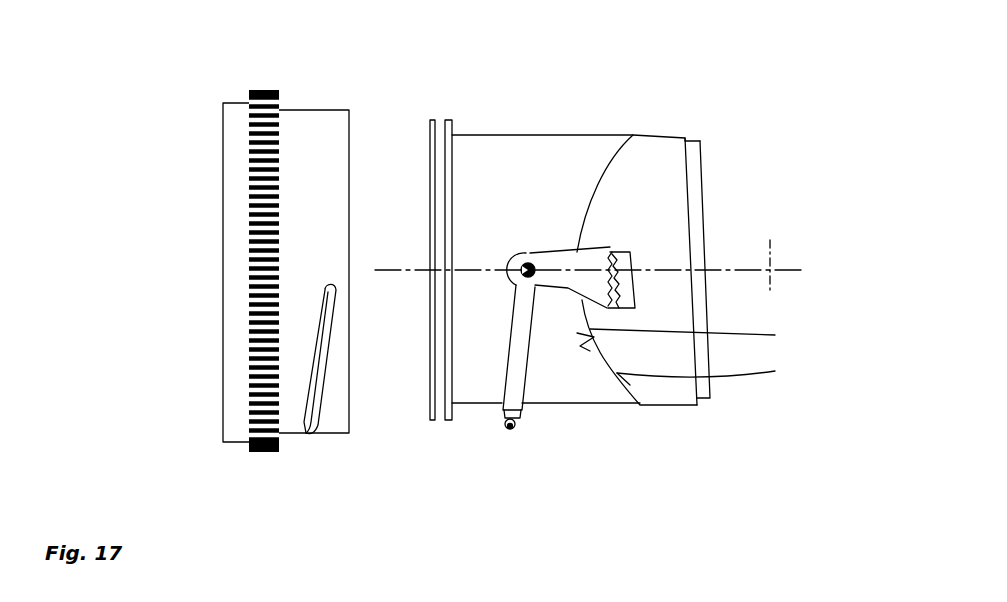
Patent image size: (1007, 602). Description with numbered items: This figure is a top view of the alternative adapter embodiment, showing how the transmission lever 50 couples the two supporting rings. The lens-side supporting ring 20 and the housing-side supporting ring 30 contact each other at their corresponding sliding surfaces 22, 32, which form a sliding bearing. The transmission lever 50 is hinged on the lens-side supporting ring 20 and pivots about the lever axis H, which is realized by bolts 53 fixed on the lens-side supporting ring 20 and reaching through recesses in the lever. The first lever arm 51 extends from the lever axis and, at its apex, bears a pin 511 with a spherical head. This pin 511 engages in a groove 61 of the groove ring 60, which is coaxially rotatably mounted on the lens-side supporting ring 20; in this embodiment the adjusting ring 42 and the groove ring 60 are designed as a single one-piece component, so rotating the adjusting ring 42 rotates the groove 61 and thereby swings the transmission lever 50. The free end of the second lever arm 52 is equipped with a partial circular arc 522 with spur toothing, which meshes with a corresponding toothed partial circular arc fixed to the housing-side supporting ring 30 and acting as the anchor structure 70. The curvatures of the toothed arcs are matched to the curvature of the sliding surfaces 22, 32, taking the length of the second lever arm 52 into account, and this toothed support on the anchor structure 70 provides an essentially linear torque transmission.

The lens-side supporting ring 20 is at (481, 161).
The sliding surface 22 is at (697, 352).
The housing-side supporting ring 30 is at (672, 285).
The sliding surface 32 is at (704, 333).
The adjusting ring 42 is at (255, 130).
The transmission lever 50 is at (652, 283).
The first lever arm 51 is at (519, 342).
The second lever arm 52 is at (574, 274).
The bolt 53 is at (530, 265).
The groove ring 60 is at (300, 187).
The groove 61 is at (318, 357).
The anchor structure 70 is at (623, 274).
The pin 511 is at (506, 430).
The partial circular arc with spur toothing 522 is at (604, 278).